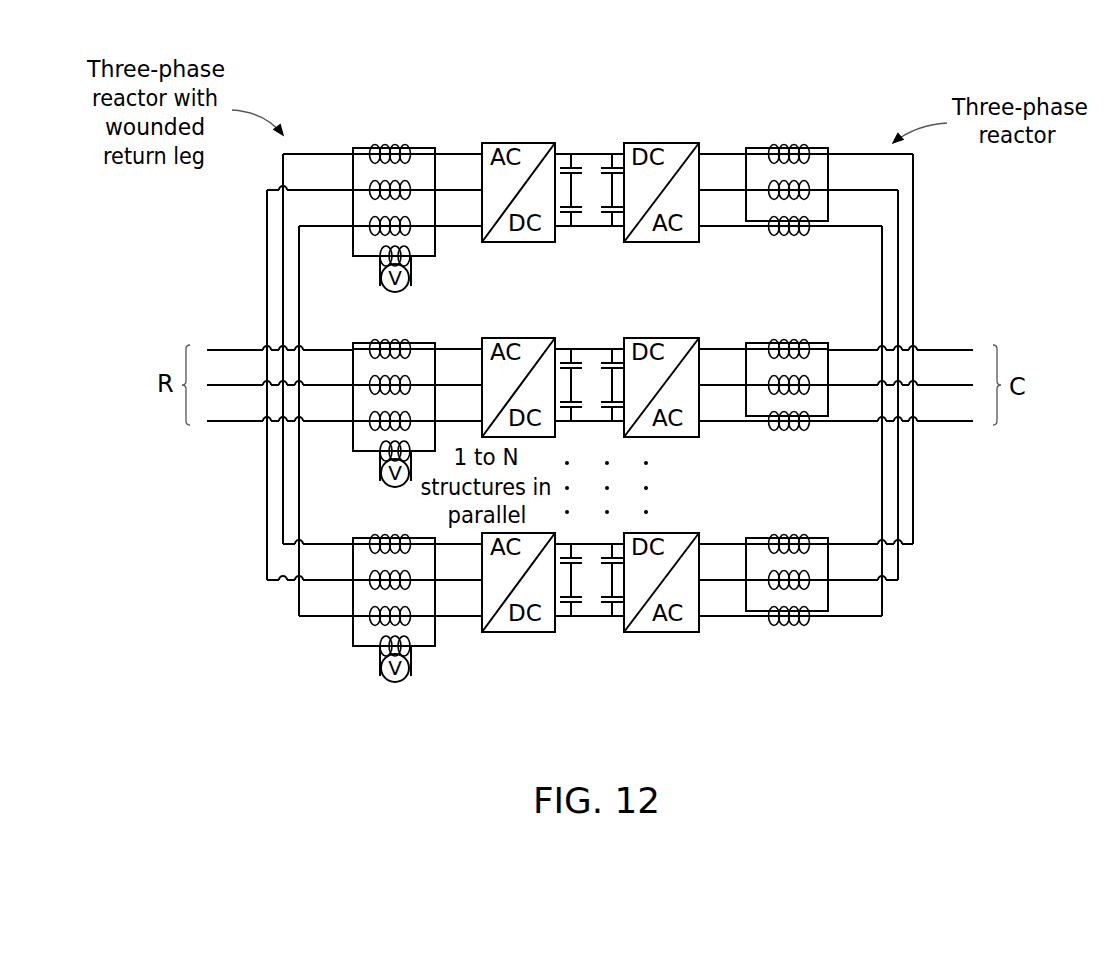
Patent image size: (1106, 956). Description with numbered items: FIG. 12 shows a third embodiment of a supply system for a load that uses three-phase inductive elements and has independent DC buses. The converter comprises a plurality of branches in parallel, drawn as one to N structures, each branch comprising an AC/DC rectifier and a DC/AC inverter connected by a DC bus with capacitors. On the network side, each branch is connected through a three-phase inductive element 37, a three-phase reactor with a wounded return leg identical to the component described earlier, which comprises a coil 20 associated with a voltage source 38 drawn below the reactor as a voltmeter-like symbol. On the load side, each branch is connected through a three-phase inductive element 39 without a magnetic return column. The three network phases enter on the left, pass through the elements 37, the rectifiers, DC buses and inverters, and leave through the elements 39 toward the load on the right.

The coil 20 is at (521, 633).
The three-phase inductive element 37 is at (283, 637).
The voltage source 38 is at (382, 678).
The three-phase inductive element without a magnetic return column 39 is at (782, 653).